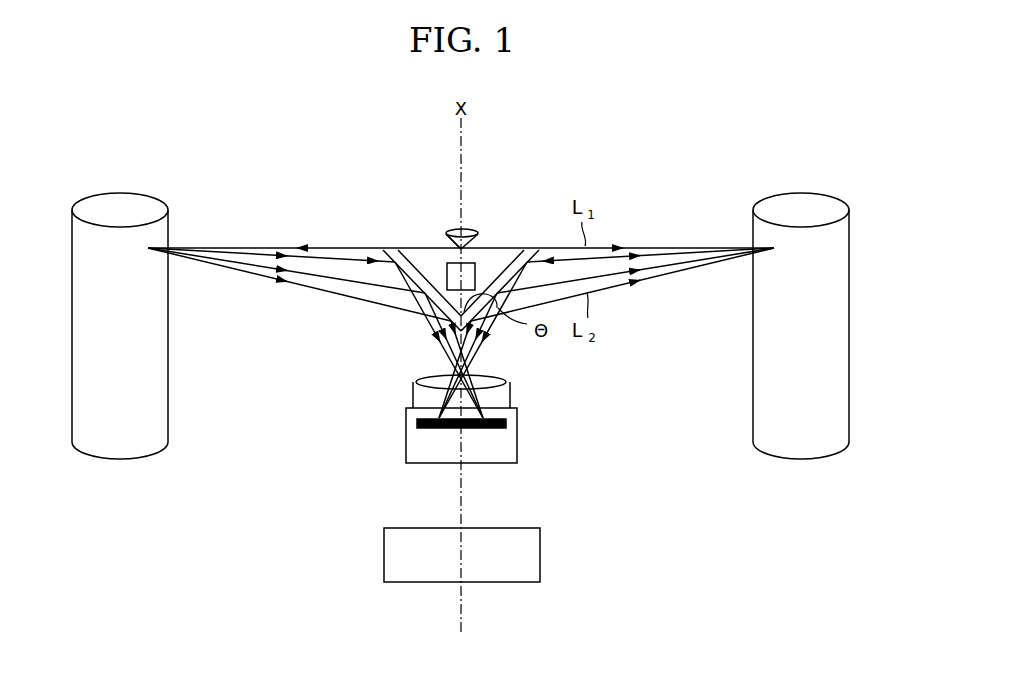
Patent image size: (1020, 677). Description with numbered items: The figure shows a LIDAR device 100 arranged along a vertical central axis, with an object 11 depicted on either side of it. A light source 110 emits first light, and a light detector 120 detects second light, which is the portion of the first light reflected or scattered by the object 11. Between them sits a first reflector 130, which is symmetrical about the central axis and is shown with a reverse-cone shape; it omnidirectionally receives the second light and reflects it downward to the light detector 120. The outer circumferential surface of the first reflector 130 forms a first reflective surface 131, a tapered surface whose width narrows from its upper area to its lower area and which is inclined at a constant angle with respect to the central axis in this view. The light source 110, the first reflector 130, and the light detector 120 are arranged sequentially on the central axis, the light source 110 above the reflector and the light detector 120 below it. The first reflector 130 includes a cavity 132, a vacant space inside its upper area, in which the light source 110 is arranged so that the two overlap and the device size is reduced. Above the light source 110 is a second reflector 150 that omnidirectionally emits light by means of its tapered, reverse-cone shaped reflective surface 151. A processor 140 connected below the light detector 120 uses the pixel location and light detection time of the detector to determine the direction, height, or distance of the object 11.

The LIDAR device 100 is at (682, 173).
The object 11 is at (123, 448).
The light source 110 is at (491, 264).
The light detector 120 is at (507, 438).
The first reflector 130 is at (446, 260).
The first reflective surface 131 is at (403, 281).
The cavity 132 is at (468, 282).
The processor 140 is at (540, 555).
The second reflector 150 is at (477, 233).
The reflective surface 151 is at (436, 238).